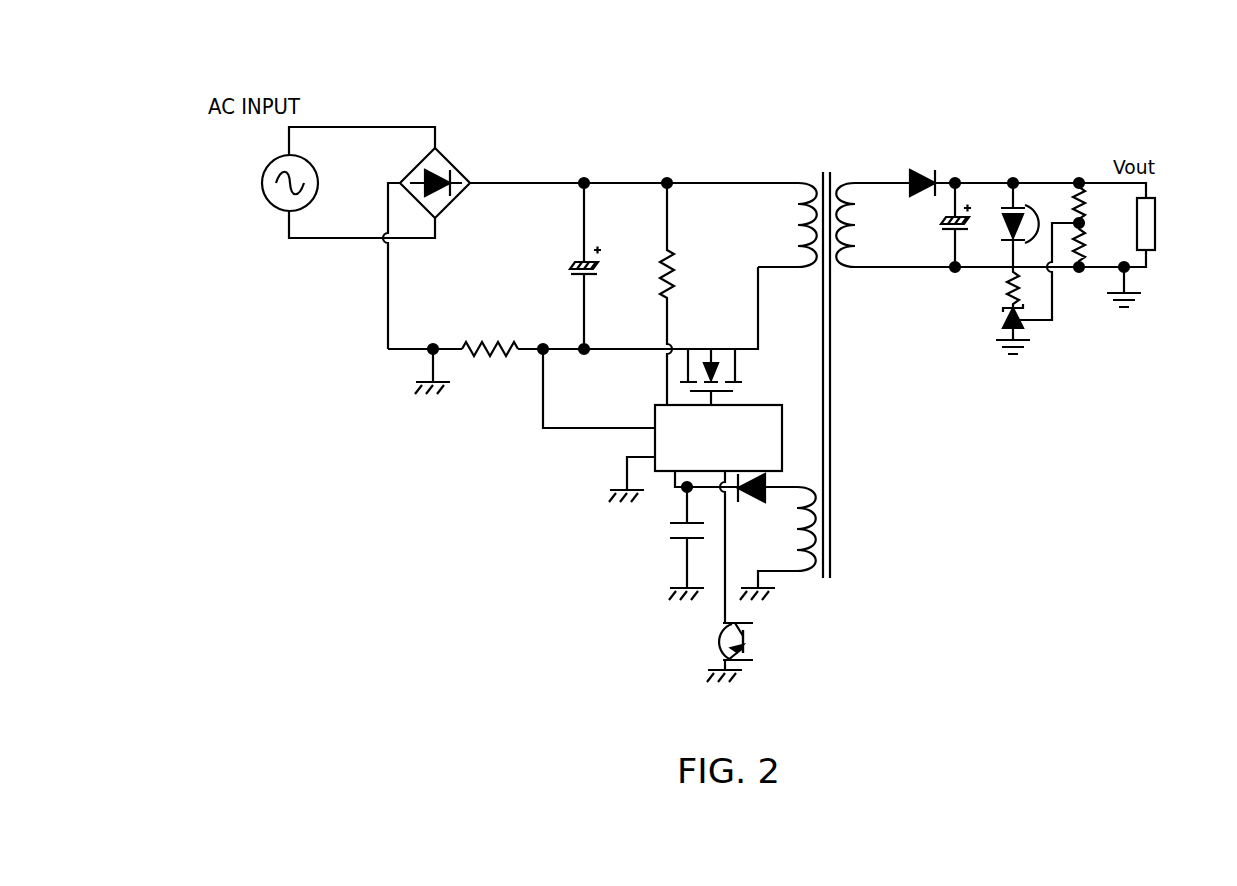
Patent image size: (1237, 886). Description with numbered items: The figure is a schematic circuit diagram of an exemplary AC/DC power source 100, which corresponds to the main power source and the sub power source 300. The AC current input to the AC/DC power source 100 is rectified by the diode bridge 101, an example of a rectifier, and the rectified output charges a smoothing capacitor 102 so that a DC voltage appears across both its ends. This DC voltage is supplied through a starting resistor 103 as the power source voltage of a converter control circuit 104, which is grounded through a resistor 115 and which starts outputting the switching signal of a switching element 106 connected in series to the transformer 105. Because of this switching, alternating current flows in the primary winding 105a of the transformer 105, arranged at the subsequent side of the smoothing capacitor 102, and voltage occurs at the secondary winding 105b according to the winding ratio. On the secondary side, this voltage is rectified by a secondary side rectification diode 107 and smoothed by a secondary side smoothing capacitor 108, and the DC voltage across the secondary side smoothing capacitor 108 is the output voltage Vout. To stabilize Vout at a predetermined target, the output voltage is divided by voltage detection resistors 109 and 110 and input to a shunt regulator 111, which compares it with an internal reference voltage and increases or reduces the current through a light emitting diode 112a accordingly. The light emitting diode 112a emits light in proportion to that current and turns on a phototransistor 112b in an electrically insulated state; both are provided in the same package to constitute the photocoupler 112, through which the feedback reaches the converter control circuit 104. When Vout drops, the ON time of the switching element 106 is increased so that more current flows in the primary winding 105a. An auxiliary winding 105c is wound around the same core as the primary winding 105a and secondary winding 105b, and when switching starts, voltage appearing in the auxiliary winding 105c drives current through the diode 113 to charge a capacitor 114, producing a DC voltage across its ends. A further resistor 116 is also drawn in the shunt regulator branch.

The AC/DC power source 100 is at (927, 40).
The diode bridge 101 is at (451, 162).
The smoothing capacitor 102 is at (569, 267).
The starting resistor 103 is at (685, 278).
The converter control circuit 104 is at (770, 405).
The transformer 105 is at (819, 366).
The primary winding 105a is at (797, 183).
The secondary winding 105b is at (848, 183).
The auxiliary winding 105c is at (806, 573).
The switching element 106 is at (700, 349).
The secondary side rectification diode 107 is at (928, 171).
The secondary side smoothing capacitor 108 is at (940, 228).
The voltage detection resistor 109 is at (1085, 206).
The voltage detection resistor 110 is at (1085, 242).
The shunt regulator 111 is at (1003, 321).
The photocoupler 112 is at (708, 642).
The light emitting diode 112a is at (1038, 202).
The phototransistor 112b is at (748, 646).
The diode 113 is at (755, 503).
The capacitor 114 is at (670, 529).
The resistor 115 is at (522, 328).
The resistor 116 is at (1006, 286).
The sub power source 300 is at (1155, 218).